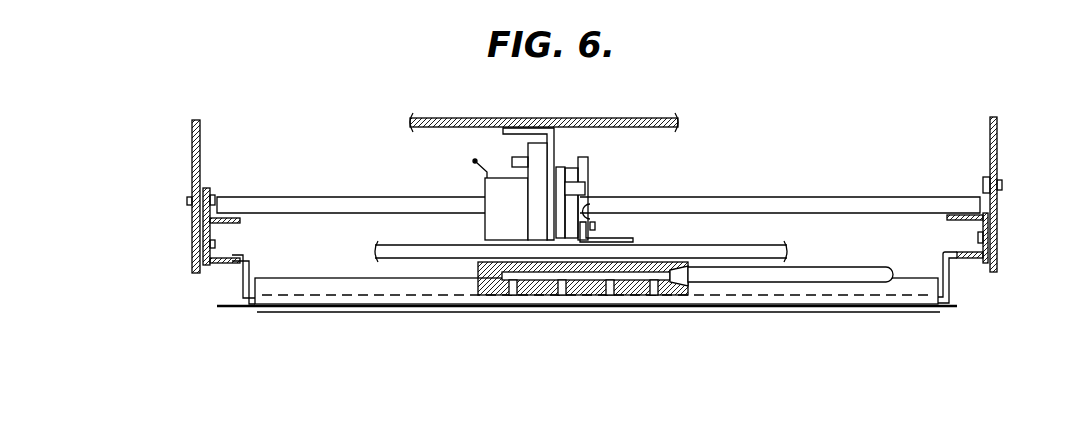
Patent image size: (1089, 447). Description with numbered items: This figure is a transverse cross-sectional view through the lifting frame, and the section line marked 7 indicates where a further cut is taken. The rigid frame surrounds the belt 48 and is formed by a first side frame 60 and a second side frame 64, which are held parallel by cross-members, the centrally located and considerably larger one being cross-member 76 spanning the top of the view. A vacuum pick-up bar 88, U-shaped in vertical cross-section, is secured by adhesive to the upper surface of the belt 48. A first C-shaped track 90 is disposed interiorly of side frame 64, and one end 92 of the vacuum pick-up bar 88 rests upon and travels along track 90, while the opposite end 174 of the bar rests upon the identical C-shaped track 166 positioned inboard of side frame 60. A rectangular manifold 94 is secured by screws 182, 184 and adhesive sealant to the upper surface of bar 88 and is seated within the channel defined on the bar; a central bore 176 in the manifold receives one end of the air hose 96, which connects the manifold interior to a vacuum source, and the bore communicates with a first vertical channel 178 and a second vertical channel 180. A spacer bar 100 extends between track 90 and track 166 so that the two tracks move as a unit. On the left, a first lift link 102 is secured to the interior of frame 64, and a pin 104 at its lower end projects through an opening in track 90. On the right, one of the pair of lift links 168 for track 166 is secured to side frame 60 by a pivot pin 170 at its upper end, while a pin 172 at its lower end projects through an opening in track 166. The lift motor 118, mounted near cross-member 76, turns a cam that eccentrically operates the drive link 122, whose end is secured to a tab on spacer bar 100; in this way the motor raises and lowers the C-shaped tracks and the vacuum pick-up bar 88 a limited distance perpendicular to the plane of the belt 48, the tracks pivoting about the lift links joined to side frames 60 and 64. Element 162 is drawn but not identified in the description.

The section line 7- 7 is at (200, 306).
The belt 48 is at (935, 306).
The first side frame 60 is at (1000, 200).
The second side frame 64 is at (190, 183).
The second cross-member 76 is at (620, 118).
The vacuum pick-up bar 88 is at (752, 300).
The first C-shaped track 90 is at (210, 268).
The one end of vacuum pick-up bar 92 is at (240, 255).
The rectangular manifold 94 is at (586, 286).
The air hose 96 is at (810, 270).
The spacer bar 100 is at (760, 243).
The first lift link 102 is at (205, 190).
The pin 104 is at (215, 243).
The lift motor 118 is at (487, 228).
The drive link 122 is at (585, 212).
The upper fastener 162 is at (215, 200).
The C-shaped track 166 is at (975, 262).
The lift link 168 is at (990, 228).
The pivot pin 170 is at (1000, 185).
The pin 172 is at (948, 215).
The opposite end of vacuum bar 174 is at (945, 254).
The central bore 176 is at (540, 276).
The first vertical channel 178 is at (513, 295).
The second vertical channel 180 is at (655, 295).
The screw 182 is at (610, 295).
The screw 184 is at (562, 295).